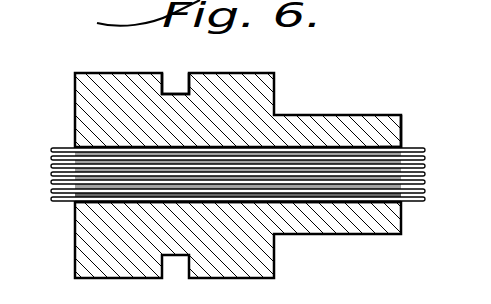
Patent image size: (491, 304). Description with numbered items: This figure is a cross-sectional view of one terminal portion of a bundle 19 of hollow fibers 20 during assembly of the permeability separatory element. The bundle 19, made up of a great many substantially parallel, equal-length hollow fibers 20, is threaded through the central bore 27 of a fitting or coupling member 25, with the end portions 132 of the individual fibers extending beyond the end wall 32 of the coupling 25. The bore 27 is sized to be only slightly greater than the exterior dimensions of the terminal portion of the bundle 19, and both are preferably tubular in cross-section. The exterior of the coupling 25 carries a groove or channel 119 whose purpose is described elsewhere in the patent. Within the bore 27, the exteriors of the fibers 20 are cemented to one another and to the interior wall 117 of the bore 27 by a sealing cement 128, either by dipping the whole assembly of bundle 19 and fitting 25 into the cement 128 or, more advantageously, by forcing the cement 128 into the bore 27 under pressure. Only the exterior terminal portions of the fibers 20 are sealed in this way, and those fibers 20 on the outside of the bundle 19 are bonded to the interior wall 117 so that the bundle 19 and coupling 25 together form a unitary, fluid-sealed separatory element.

The bundle 19 is at (251, 178).
The hollow fibers 20 is at (248, 217).
The fitting or coupling member 25 is at (317, 115).
The central bore 27 is at (72, 202).
The end wall 32 is at (75, 265).
The interior wall 117 is at (92, 203).
The groove or channel 119 is at (172, 82).
The cement 128 is at (401, 147).
The end portions 132 is at (61, 148).